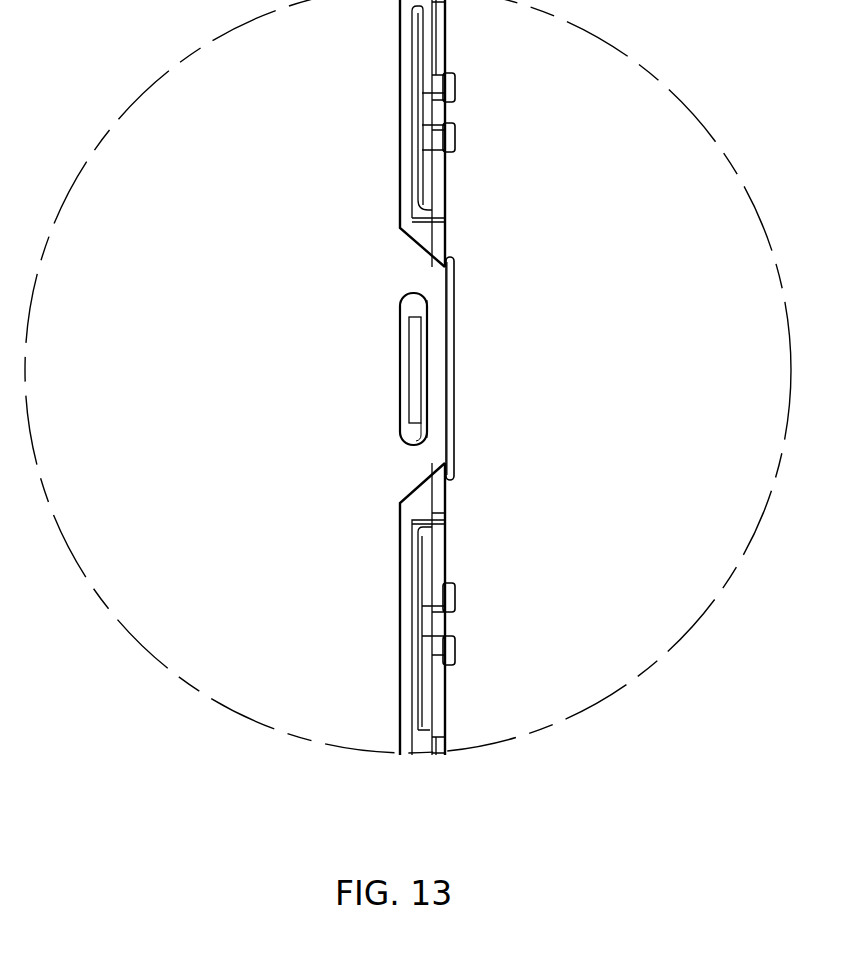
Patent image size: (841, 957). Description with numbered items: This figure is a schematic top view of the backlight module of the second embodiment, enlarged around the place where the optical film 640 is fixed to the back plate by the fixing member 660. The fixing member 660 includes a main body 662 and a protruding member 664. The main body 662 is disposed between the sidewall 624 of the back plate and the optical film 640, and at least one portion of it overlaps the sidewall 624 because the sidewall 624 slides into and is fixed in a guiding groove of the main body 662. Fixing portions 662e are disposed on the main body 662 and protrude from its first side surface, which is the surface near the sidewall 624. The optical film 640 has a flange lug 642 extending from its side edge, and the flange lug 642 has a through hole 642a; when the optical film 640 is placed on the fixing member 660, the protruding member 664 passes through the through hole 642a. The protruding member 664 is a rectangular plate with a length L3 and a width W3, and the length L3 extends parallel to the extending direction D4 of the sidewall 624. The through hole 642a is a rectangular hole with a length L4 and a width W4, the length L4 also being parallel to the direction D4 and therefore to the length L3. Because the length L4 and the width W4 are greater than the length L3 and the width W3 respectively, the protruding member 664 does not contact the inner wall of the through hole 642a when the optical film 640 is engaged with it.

The optical film 640 is at (372, 703).
The fixing member 660 is at (529, 377).
The main body 662 is at (511, 377).
The fixing portion 662e is at (457, 82).
The protruding member 664 is at (491, 364).
The flange lug 642 is at (437, 446).
The through hole 642a is at (432, 433).
The sidewall 624 is at (452, 368).
The width of protruding member W3 is at (468, 272).
The width of through hole W4 is at (467, 462).
The length of protruding member L3 is at (420, 423).
The length of through hole L4 is at (400, 445).
The extending direction of sidewall D4 is at (714, 300).